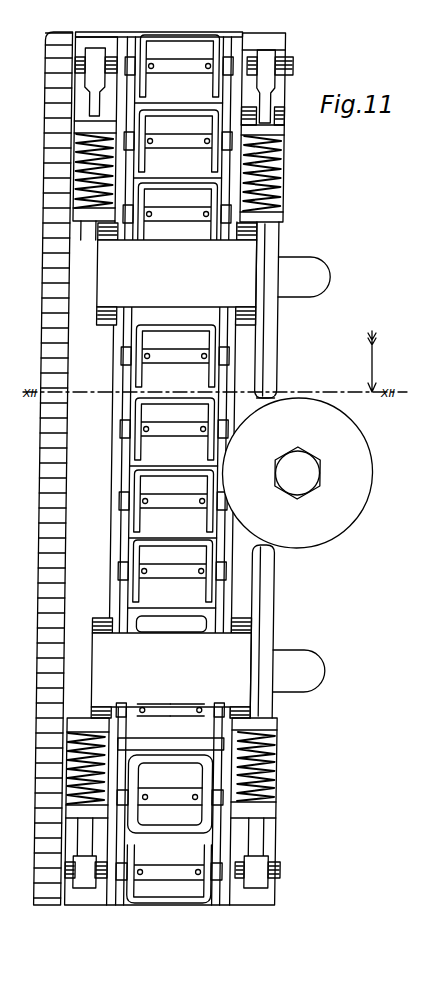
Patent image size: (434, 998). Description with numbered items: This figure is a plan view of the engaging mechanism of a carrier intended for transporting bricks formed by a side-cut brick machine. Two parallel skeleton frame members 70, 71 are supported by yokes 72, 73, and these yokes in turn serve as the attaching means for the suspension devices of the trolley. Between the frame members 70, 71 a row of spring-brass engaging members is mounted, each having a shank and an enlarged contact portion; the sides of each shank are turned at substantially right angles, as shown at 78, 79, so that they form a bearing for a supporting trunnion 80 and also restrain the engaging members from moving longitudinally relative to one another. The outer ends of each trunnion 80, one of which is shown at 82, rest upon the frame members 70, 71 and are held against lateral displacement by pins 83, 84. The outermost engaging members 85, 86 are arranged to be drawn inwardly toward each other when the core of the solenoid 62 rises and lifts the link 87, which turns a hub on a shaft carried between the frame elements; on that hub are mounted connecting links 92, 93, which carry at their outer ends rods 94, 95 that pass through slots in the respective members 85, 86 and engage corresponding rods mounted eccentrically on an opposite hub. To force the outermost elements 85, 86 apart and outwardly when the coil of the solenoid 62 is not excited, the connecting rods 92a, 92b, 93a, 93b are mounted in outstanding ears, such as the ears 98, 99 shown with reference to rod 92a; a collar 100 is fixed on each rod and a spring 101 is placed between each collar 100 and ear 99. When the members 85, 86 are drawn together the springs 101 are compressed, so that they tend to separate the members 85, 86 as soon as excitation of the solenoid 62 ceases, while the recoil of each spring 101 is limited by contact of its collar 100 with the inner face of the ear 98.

The solenoid 62 is at (330, 500).
The skeleton frame member 70 is at (124, 898).
The skeleton frame member 71 is at (235, 900).
The yoke 72 is at (171, 668).
The yoke 73 is at (177, 274).
The turned side of shank portion 78 is at (137, 523).
The turned side of shank portion 79 is at (220, 523).
The supporting trunnion 80 is at (168, 428).
The outer end of trunnion 82 is at (258, 401).
The pin 83 is at (152, 704).
The pin 84 is at (213, 705).
The outermost engaging member 85 is at (190, 902).
The outermost engaging member 86 is at (166, 38).
The link 87 is at (129, 428).
The connecting link 92 is at (271, 587).
The connecting rod 92a is at (268, 74).
The connecting rod 92b is at (260, 872).
The connecting link 93 is at (272, 362).
The connecting rod 93a is at (100, 108).
The connecting rod 93b is at (100, 890).
The rod 94 is at (199, 852).
The rod 95 is at (110, 76).
The outstanding ear 98 is at (274, 810).
The outstanding ear 99 is at (276, 725).
The collar 100 is at (278, 800).
The spring 101 is at (284, 167).